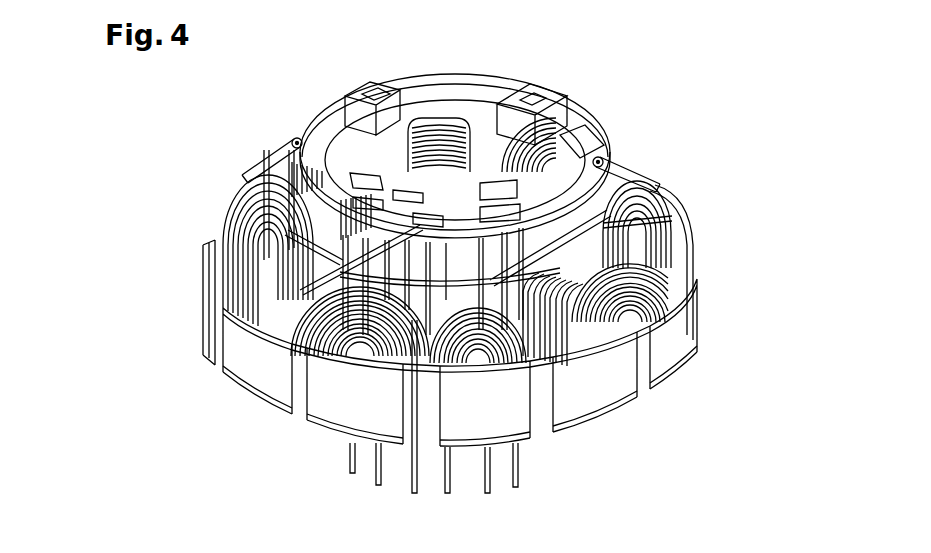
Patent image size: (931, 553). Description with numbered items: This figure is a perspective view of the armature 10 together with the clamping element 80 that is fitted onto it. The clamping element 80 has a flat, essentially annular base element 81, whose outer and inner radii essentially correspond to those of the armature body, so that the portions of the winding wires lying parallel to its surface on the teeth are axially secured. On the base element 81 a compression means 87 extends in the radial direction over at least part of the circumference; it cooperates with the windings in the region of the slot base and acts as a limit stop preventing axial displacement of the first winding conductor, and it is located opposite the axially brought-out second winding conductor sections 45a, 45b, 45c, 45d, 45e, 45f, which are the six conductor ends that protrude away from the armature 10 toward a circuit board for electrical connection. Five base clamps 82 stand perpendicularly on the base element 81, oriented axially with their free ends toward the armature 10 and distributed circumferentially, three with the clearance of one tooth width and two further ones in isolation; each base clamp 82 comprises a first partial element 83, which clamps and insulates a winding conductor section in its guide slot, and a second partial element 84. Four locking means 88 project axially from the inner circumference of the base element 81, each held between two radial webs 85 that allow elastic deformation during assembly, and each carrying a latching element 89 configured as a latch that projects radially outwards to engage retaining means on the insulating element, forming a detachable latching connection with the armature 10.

The armature 10 is at (476, 284).
The second winding conductor section 45a is at (523, 474).
The second winding conductor section 45b is at (493, 478).
The second winding conductor section 45c is at (453, 482).
The second winding conductor section 45d is at (405, 482).
The second winding conductor section 45e is at (370, 475).
The second winding conductor section 45f is at (343, 460).
The clamping element 80 is at (455, 128).
The base element 81 is at (470, 86).
The base clamp 82 is at (340, 118).
The first partial element 83 is at (535, 368).
The second partial element 84 is at (522, 440).
The web 85 is at (372, 96).
The compression means 87 is at (612, 238).
The locking means 88 is at (403, 147).
The latching element 89 is at (565, 130).